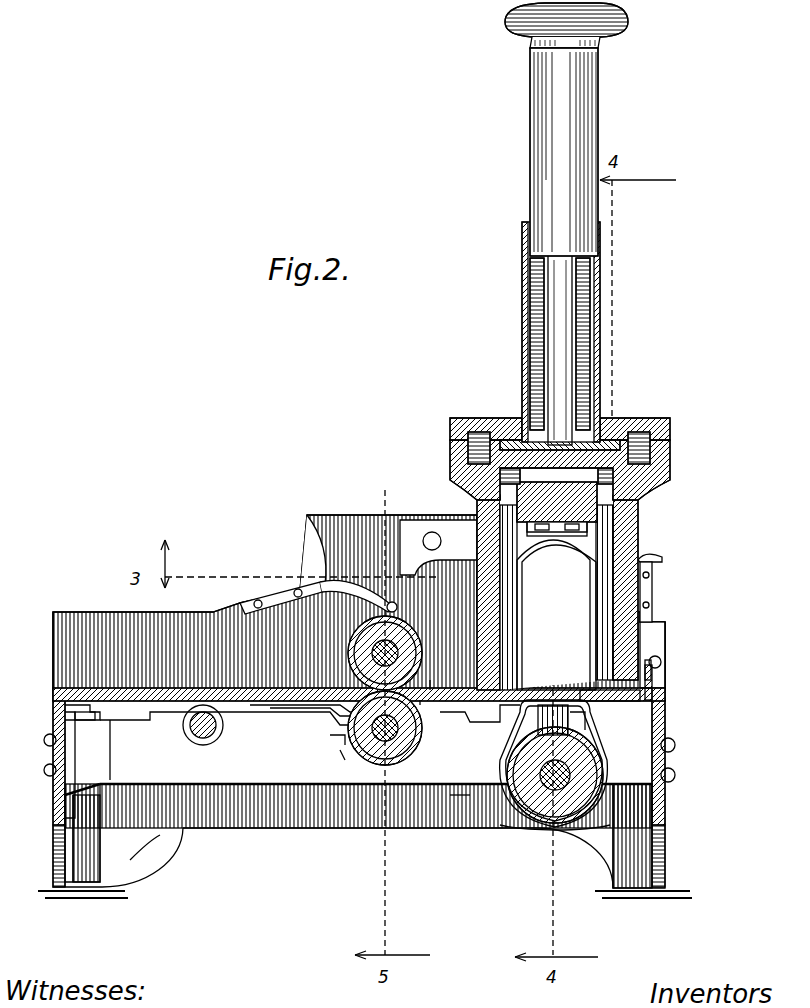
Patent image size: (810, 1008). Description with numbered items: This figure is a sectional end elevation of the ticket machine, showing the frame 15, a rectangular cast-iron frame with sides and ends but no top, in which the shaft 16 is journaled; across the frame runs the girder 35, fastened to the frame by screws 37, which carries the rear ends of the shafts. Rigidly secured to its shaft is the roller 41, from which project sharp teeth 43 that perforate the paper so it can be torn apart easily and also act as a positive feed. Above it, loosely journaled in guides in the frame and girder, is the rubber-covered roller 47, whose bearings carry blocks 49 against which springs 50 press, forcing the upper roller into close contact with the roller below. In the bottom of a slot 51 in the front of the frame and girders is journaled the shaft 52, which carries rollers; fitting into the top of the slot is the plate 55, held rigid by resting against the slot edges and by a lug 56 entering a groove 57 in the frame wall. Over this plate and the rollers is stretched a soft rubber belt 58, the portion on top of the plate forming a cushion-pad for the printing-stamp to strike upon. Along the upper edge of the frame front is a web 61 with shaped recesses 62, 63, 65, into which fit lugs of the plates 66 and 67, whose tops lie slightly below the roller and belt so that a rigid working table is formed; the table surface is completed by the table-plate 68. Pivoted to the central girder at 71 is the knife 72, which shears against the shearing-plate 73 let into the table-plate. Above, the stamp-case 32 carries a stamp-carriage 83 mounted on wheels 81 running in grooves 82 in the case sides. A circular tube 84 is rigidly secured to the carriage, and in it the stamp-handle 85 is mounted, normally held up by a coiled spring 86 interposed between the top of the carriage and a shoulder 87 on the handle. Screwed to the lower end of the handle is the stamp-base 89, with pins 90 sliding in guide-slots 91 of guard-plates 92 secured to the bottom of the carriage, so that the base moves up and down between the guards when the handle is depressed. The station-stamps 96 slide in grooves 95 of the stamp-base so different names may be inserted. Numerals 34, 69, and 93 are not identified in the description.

The frame 15 is at (688, 820).
The shaft 16 is at (205, 745).
The stamp-case 32 is at (452, 441).
The guide plate 34 is at (664, 560).
The girder 35 is at (130, 845).
The screws 37 is at (46, 768).
The roller 41 is at (347, 766).
The sharp teeth 43 is at (461, 795).
The rubber-covered roller 47 is at (348, 650).
The blocks 49 is at (398, 606).
The springs 50 is at (340, 590).
The slot 51 is at (540, 698).
The shaft 52 is at (520, 773).
The plate 55 is at (560, 705).
The lug 56 is at (588, 718).
The groove 57 is at (545, 827).
The belt 58 is at (553, 668).
The web 61 is at (36, 790).
The recess 62 is at (232, 721).
The recess 63 is at (296, 688).
The recess 65 is at (490, 715).
The plate 66 is at (186, 690).
The plate 67 is at (439, 675).
The table-plate 68 is at (590, 690).
The stud 69 is at (404, 670).
The pivot 71 is at (660, 662).
The knife 72 is at (654, 686).
The shearing-plate 73 is at (666, 712).
The wheels 81 is at (478, 430).
The grooves 82 is at (470, 432).
The stamp-carriage 83 is at (602, 418).
The circular tube 84 is at (526, 322).
The stamp-handle 85 is at (545, 170).
The coiled spring 86 is at (530, 284).
The shoulder 87 is at (602, 248).
The stamp-base 89 is at (520, 432).
The pins 90 is at (494, 470).
The guide-slots 91 is at (598, 593).
The guard-plates 92 is at (490, 530).
The valve 93 is at (577, 537).
The grooves 95 is at (515, 492).
The station-stamps 96 is at (538, 537).